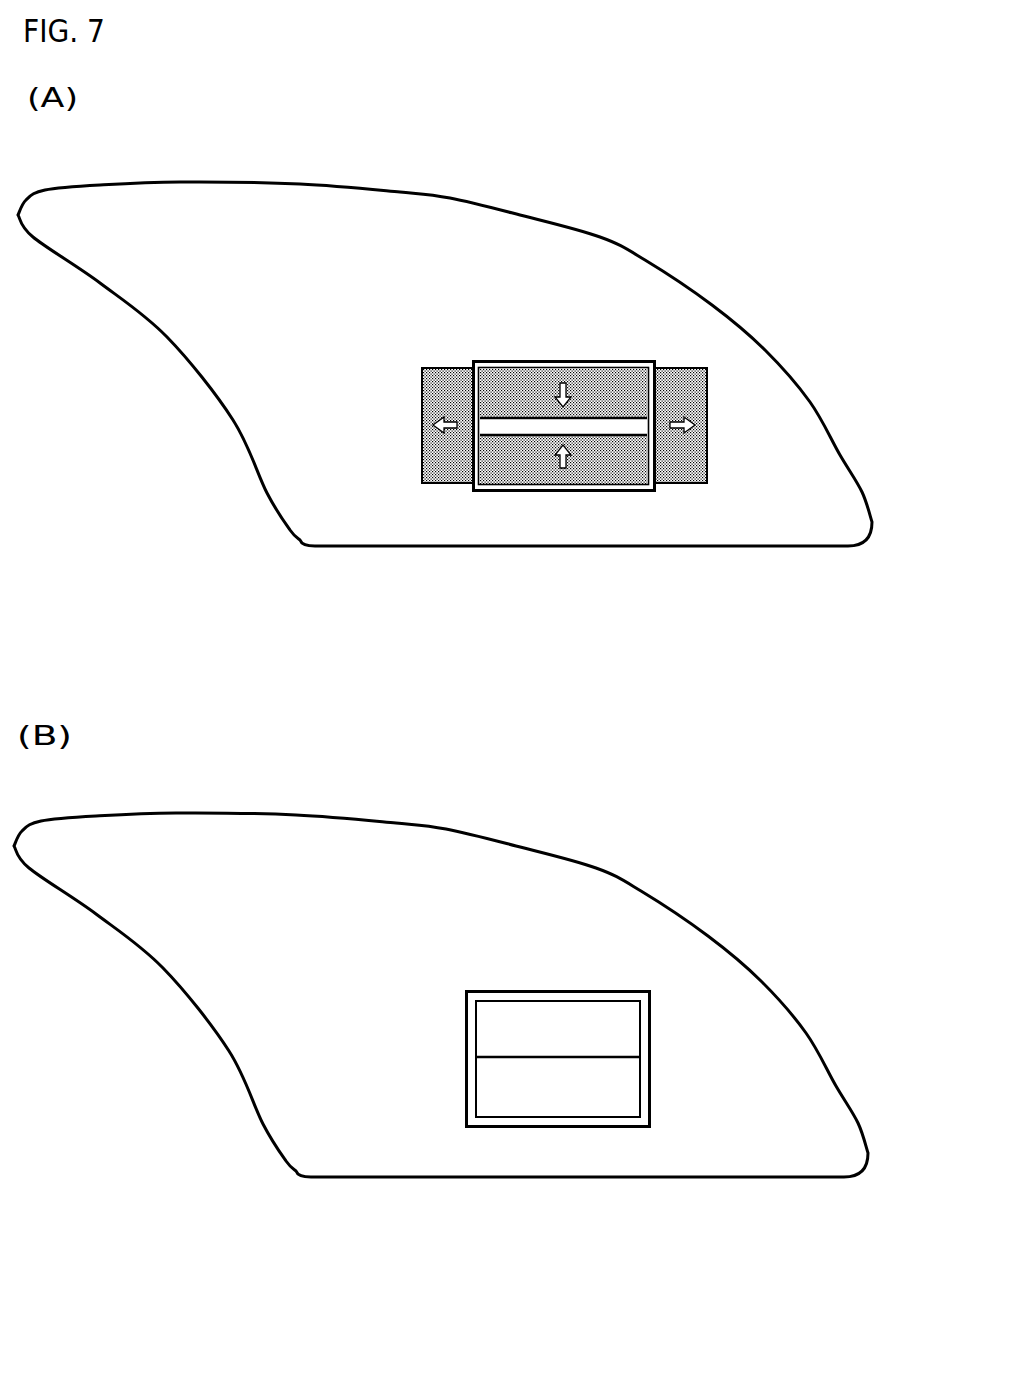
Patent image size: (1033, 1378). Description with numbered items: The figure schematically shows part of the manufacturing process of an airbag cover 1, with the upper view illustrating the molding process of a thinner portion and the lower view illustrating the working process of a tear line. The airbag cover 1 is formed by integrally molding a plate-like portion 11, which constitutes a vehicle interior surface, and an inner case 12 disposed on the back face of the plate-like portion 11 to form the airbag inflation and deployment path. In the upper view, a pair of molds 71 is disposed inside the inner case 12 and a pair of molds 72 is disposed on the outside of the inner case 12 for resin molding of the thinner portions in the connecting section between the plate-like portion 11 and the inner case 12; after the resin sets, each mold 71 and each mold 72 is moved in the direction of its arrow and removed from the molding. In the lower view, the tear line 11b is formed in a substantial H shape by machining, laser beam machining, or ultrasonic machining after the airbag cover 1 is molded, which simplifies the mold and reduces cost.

The airbag cover 1 is at (669, 222).
The plate-like portion 11 is at (402, 218).
The tear line 11b is at (562, 1058).
The inner case 12 is at (562, 360).
The mold 71 is at (523, 383).
The mold 72 is at (432, 393).